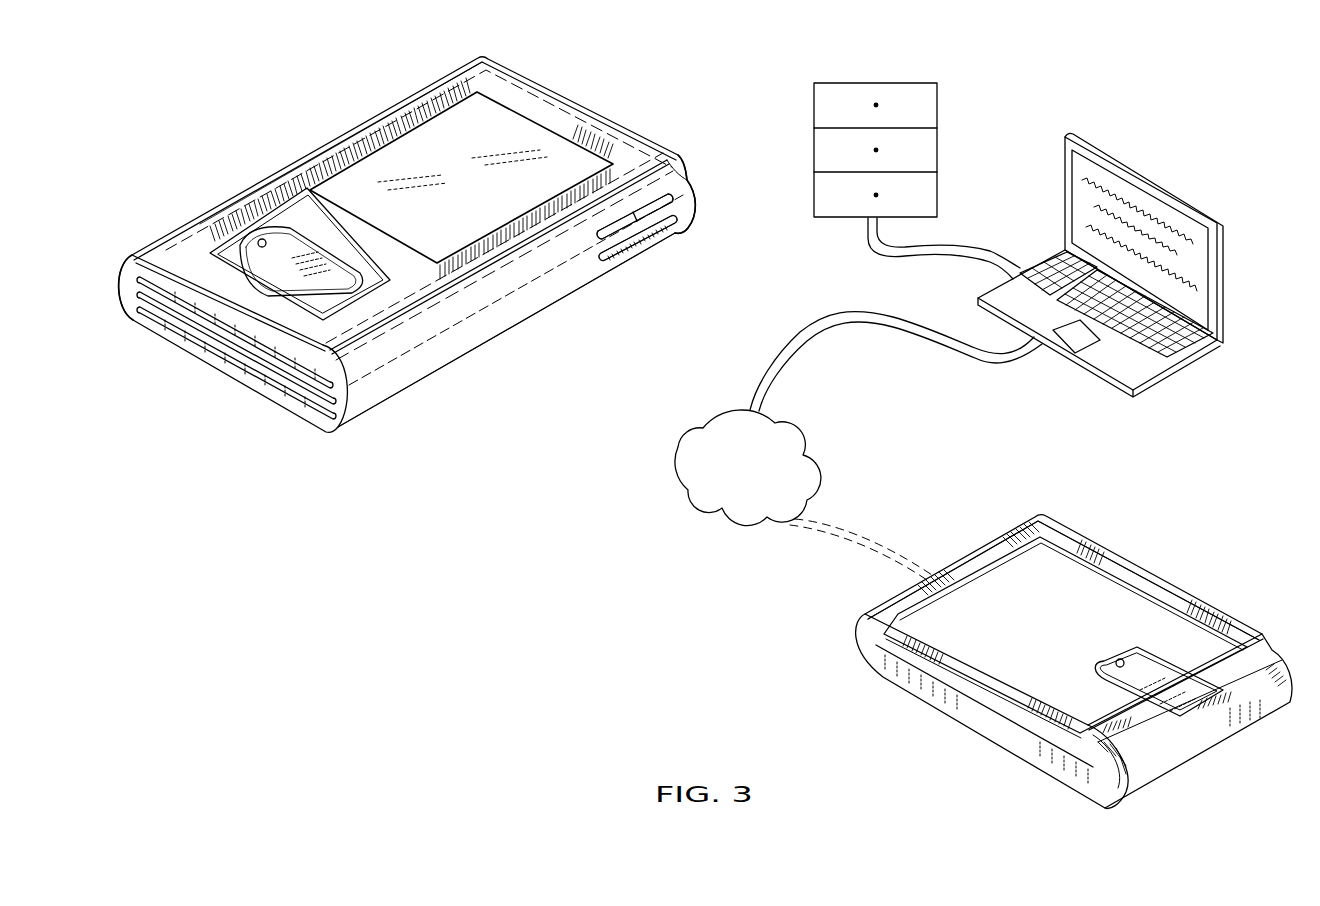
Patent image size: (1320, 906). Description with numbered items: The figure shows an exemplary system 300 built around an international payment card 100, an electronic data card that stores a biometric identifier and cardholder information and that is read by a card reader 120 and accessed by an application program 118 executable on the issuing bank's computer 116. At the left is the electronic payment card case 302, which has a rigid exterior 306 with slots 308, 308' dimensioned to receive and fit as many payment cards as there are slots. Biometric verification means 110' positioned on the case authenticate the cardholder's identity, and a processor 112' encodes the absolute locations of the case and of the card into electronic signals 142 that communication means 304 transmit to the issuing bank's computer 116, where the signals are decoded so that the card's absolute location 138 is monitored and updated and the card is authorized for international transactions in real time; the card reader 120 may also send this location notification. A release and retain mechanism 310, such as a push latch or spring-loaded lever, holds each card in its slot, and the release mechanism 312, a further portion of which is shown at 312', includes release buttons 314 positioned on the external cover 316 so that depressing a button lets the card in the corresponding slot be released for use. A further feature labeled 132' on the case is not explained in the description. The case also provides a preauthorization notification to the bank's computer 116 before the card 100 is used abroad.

The system 300 is at (458, 611).
The electronic payment card case 302 is at (490, 50).
The communication means 304 is at (146, 250).
The rigid exterior 306 is at (507, 302).
The slot 308 is at (284, 364).
The slot 308' is at (259, 386).
The release and retain mechanism 310 is at (681, 166).
The release mechanism 312 is at (676, 218).
The first button 312' is at (638, 282).
The release button 314 is at (550, 106).
The external cover 316 is at (937, 97).
The biometric verification means 110' is at (300, 207).
The processor 112' is at (505, 299).
The bezel 132' is at (341, 142).
The computer 116 is at (1138, 176).
The application program 118 is at (1167, 228).
The absolute location 138 is at (770, 481).
The electronic signals 142 is at (802, 430).
The international payment card 100 is at (1050, 561).
The card reader 120 is at (1116, 561).